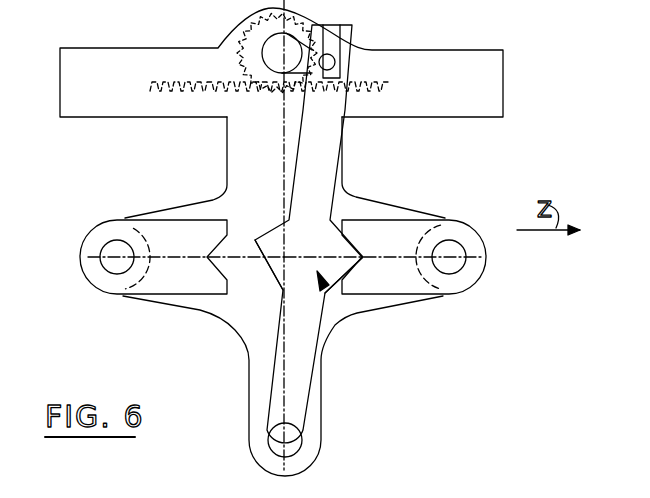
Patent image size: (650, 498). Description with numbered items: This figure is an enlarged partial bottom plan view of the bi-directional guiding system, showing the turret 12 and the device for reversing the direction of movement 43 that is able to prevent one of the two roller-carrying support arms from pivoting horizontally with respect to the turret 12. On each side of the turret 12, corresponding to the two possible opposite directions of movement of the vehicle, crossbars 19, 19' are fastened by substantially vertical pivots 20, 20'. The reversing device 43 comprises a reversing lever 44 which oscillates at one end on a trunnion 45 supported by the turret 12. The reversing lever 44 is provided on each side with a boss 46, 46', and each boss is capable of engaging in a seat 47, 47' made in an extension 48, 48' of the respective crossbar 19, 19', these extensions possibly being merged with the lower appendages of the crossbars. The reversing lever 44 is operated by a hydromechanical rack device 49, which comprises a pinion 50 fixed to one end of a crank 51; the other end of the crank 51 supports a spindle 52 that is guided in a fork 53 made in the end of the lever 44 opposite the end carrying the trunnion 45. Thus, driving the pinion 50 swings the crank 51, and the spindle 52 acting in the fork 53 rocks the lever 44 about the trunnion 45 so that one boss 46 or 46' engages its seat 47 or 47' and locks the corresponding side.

The turret 12 is at (260, 393).
The crossbar 19 is at (417, 255).
The crossbar 19' is at (154, 271).
The pivot 20 is at (483, 287).
The pivot 20' is at (95, 223).
The device for reversing the direction of movement 43 is at (324, 288).
The reversing lever 44 is at (288, 380).
The trunnion 45 is at (292, 448).
The boss 46 is at (363, 317).
The boss 46' is at (241, 318).
The seat 47 is at (414, 290).
The seat 47' is at (153, 296).
The extension 48 is at (440, 234).
The extension 48' is at (137, 285).
The hydromechanical rack device 49 is at (230, 41).
The pinion 50 is at (235, 53).
The crank 51 is at (283, 62).
The spindle 52 is at (330, 72).
The fork 53 is at (333, 28).